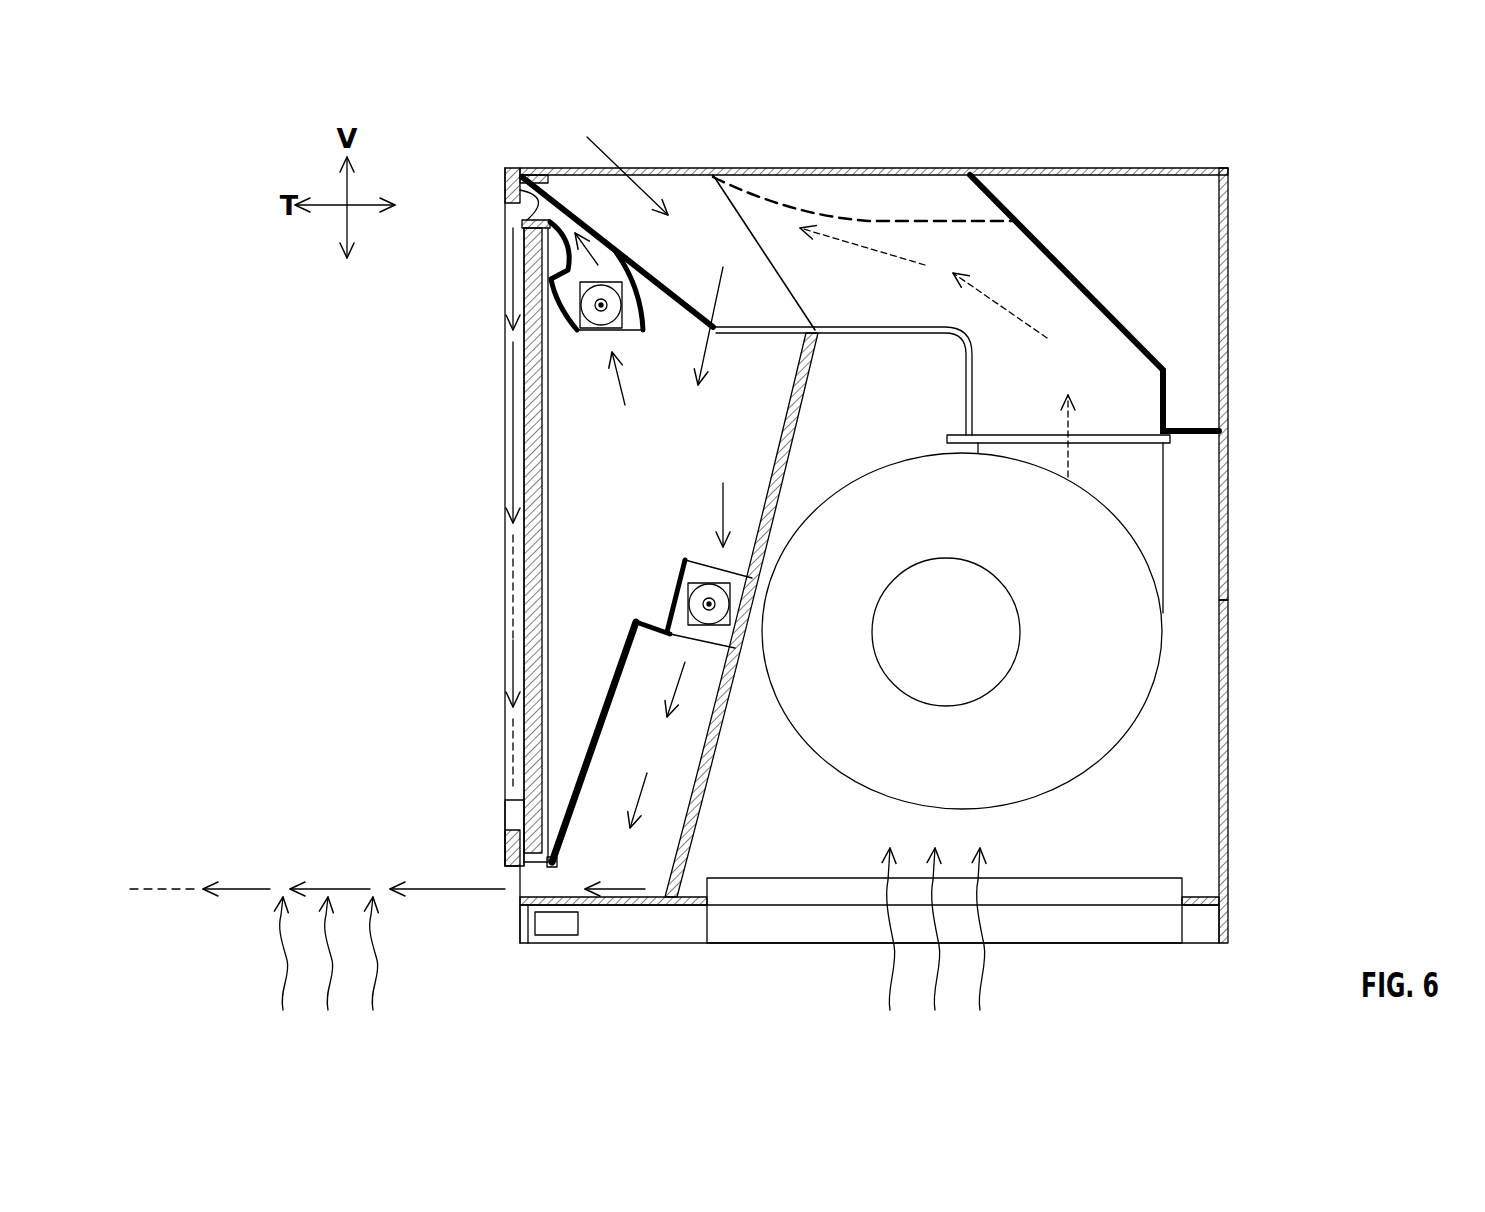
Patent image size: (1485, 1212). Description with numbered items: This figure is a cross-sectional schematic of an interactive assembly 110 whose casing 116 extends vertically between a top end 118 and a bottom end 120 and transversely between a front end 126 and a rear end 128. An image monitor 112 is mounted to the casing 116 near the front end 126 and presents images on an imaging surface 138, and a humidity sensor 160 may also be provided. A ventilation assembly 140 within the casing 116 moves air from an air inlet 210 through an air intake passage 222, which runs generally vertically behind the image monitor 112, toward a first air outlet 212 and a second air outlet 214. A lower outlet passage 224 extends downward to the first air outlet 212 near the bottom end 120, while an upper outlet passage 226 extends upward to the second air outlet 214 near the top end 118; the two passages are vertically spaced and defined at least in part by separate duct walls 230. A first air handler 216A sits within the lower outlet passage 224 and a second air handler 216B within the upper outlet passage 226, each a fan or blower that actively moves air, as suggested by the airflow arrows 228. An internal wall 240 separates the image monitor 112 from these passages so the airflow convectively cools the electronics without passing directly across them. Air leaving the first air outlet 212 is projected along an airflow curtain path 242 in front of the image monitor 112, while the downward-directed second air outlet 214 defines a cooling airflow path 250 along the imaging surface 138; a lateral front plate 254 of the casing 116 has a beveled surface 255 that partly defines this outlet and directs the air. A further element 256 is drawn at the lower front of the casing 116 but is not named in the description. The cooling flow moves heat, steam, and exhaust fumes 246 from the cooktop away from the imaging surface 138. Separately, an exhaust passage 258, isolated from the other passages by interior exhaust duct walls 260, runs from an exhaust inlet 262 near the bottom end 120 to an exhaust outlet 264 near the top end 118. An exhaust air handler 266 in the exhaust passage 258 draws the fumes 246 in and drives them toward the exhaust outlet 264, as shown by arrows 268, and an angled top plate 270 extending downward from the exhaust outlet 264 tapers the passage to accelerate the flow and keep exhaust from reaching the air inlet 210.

The interactive assembly 110 is at (904, 567).
The image monitor 112 is at (520, 411).
The casing 116 is at (1229, 487).
The top end 118 is at (1096, 168).
The bottom end 120 is at (901, 949).
The front end 126 is at (497, 530).
The rear end 128 is at (1232, 722).
The imaging surface 138 is at (524, 803).
The ventilation assembly 140 is at (638, 928).
The humidity sensor 160 is at (556, 937).
The air inlet 210 is at (916, 501).
The first air outlet 212 is at (528, 888).
The second air outlet 214 is at (503, 218).
The first air handler 216A is at (688, 598).
The second air handler 216B is at (609, 313).
The air intake passage 222 is at (812, 372).
The lower outlet passage 224 is at (640, 658).
The upper outlet passage 226 is at (597, 270).
The air flow 228 is at (605, 150).
The duct walls 230 is at (566, 328).
The internal wall 240 is at (547, 512).
The airflow curtain path 242 is at (172, 889).
The heat, steam, or exhaust fumes 246 is at (283, 972).
The cooling airflow path 250 is at (505, 735).
The lateral front plate 254 is at (503, 188).
The beveled surface 255 is at (545, 178).
The lower door block 256 is at (505, 853).
The exhaust passage 258 is at (1117, 362).
The interior exhaust duct walls 260 is at (896, 330).
The exhaust inlet 262 is at (1102, 910).
The exhaust outlet 264 is at (962, 152).
The exhaust air handler 266 is at (1162, 658).
The exhaust flow arrows 268 is at (1007, 310).
The angled top plate 270 is at (868, 220).